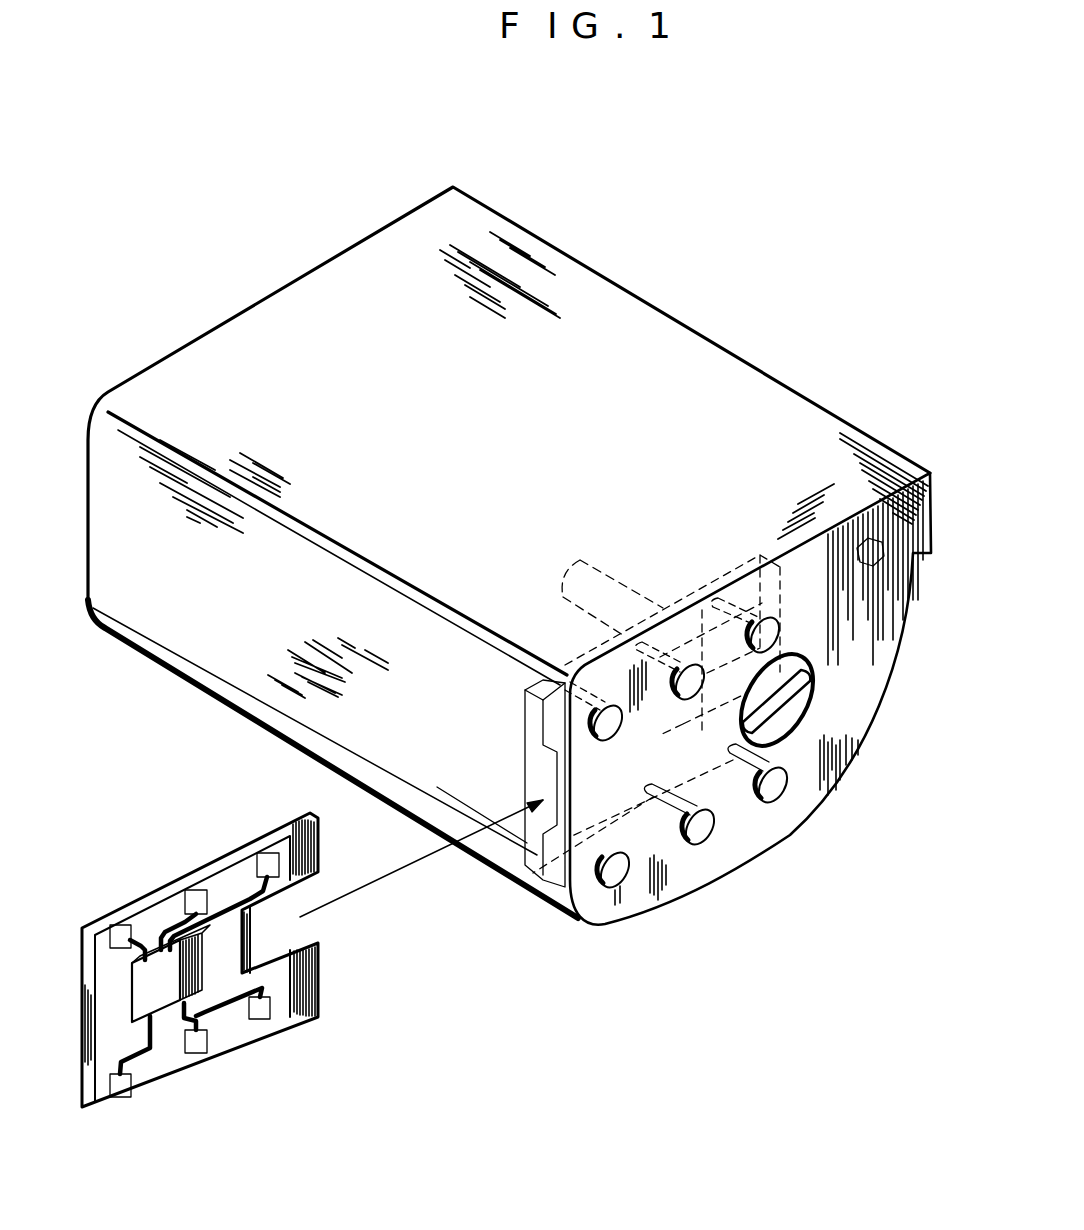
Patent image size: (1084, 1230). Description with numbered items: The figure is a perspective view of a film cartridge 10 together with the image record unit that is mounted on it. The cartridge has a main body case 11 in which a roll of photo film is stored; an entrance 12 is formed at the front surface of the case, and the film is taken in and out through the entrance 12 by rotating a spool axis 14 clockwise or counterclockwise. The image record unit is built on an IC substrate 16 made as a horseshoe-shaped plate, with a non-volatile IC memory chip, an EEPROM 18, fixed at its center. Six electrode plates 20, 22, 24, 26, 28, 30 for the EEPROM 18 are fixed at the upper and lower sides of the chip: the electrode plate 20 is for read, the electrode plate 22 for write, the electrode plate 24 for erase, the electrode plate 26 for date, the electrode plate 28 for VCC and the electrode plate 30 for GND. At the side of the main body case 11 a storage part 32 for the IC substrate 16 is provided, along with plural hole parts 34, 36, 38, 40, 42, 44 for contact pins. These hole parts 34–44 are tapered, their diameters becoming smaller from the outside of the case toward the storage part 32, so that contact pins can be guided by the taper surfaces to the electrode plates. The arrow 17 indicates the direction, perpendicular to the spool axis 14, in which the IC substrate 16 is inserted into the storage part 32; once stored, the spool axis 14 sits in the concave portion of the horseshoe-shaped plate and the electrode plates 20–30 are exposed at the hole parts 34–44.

The film cartridge 10 is at (617, 230).
The main body case 11 is at (380, 332).
The entrance 12 is at (672, 315).
The spool axis 14 is at (637, 595).
The IC substrate 16 is at (157, 888).
The insertion direction 17 is at (292, 937).
The non-volatile IC memory chip (EEPROM) 18 is at (153, 1000).
The electrode plate 20 is at (118, 930).
The electrode plate 22 is at (192, 890).
The electrode plate 24 is at (265, 855).
The electrode plate 26 is at (124, 1097).
The electrode plate 28 is at (196, 1053).
The electrode plate 30 is at (262, 1020).
The storage part 32 is at (530, 772).
The hole part for contact pin 34 is at (609, 742).
The hole part for contact pin 36 is at (682, 700).
The hole part for contact pin 38 is at (785, 650).
The hole part for contact pin 40 is at (620, 887).
The hole part for contact pin 42 is at (702, 846).
The hole part for contact pin 44 is at (777, 805).